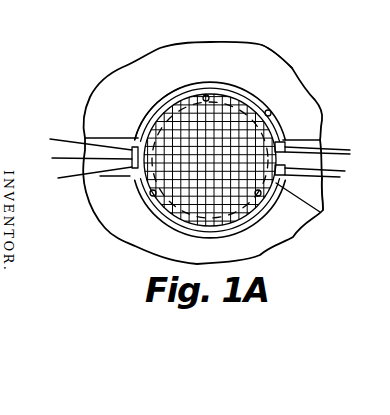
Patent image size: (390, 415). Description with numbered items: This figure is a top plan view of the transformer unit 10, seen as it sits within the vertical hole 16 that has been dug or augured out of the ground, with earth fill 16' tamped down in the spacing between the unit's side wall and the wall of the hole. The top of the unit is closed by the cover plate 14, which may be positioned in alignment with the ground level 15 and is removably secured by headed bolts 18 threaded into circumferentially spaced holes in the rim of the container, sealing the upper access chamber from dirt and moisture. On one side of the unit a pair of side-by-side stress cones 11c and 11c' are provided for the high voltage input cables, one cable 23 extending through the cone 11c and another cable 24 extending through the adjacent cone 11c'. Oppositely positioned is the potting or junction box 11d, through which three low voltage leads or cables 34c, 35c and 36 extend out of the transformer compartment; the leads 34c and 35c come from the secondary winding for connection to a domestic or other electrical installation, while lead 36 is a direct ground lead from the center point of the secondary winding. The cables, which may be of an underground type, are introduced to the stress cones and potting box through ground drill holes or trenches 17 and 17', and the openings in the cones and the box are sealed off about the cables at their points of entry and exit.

The transformer unit 10 is at (148, 205).
The cover plate 14 is at (237, 96).
The ground level 15 is at (287, 68).
The vertical hole 16 is at (238, 156).
The earth fill 16' is at (149, 89).
The ground drill hole or trench 17 is at (361, 137).
The ground drill hole or trench 17' is at (93, 122).
The headed bolts 18 is at (320, 205).
The high voltage cable 23 is at (349, 173).
The high voltage cable 24 is at (357, 150).
The stress cone 11c is at (322, 197).
The stress cone 11c' is at (324, 128).
The potting or junction box 11d is at (132, 177).
The low voltage lead 34c is at (50, 141).
The low voltage lead 35c is at (52, 160).
The ground lead 36 is at (58, 179).